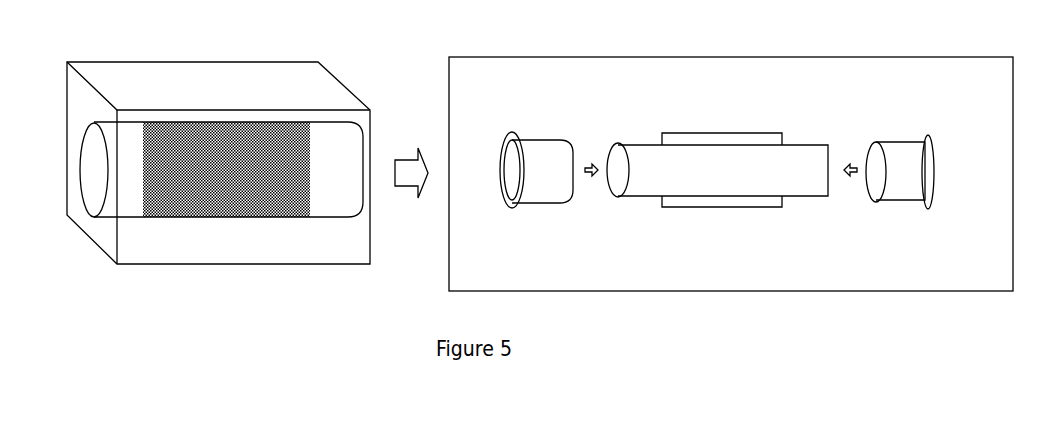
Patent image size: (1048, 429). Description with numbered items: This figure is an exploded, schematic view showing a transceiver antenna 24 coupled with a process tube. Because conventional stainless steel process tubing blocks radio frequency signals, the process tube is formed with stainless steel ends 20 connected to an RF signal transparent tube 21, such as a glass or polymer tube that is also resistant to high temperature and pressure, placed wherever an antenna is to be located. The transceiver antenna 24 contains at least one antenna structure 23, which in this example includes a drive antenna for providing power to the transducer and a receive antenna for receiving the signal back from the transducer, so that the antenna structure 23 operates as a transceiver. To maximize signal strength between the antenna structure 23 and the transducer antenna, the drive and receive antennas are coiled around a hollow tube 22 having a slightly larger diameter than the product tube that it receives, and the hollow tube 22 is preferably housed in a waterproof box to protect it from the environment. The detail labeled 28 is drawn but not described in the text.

The stainless steel ends 20 is at (489, 201).
The RF signal transparent tube 21 is at (697, 119).
The hollow tube 22 is at (95, 168).
The antenna structure 23 is at (262, 122).
The transceiver antenna 24 is at (372, 58).
The inner shell 28 is at (302, 103).